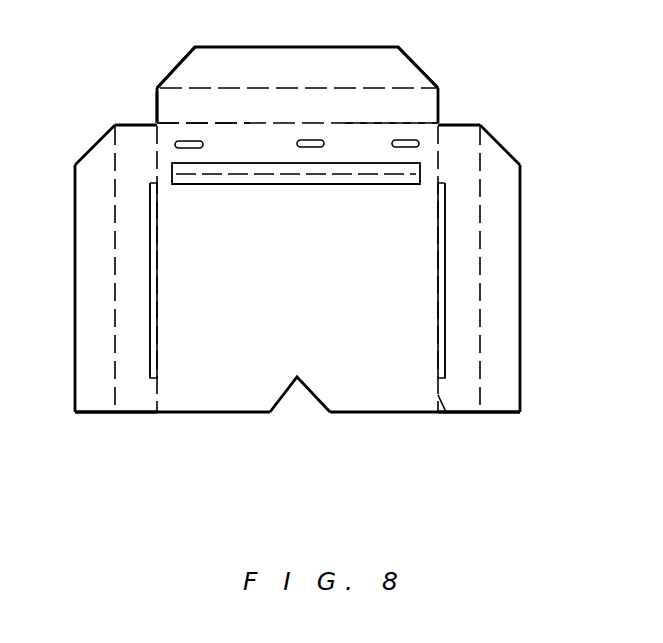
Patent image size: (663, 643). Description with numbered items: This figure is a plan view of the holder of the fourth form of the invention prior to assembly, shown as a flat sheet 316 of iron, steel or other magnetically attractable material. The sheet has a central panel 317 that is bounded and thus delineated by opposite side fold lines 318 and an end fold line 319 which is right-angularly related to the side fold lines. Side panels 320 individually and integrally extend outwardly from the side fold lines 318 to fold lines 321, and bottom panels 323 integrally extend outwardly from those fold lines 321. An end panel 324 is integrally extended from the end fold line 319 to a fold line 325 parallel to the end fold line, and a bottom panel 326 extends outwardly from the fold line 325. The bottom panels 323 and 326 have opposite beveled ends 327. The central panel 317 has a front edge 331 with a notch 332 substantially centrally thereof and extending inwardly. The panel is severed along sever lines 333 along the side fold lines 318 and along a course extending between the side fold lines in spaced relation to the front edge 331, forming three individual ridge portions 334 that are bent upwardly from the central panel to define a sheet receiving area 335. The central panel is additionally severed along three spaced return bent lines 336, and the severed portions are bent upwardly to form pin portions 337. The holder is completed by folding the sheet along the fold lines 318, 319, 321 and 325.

The sheet 316 is at (231, 413).
The central panel 317 is at (427, 134).
The side fold lines 318 is at (440, 398).
The end fold line 319 is at (162, 122).
The side panels 320 is at (139, 395).
The fold lines 321 is at (114, 310).
The bottom panels 323 is at (95, 218).
The end panel 324 is at (165, 101).
The fold line 325 is at (193, 87).
The bottom panel 326 is at (281, 47).
The beveled ends 327 is at (176, 66).
The front edge 331 is at (378, 413).
The notch 332 is at (284, 398).
The sever lines 333 is at (368, 167).
The ridge portions 334 is at (237, 183).
The sheet receiving area 335 is at (268, 282).
The return bent lines 336 is at (203, 145).
The pin portions 337 is at (392, 144).